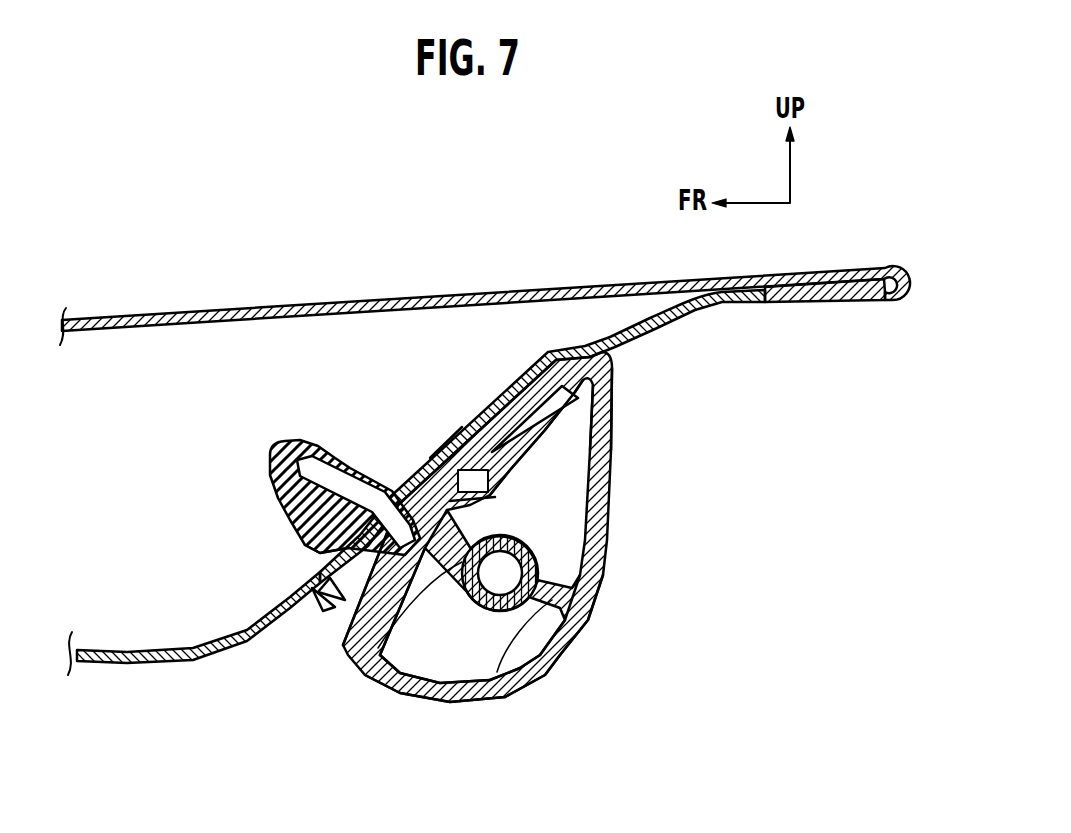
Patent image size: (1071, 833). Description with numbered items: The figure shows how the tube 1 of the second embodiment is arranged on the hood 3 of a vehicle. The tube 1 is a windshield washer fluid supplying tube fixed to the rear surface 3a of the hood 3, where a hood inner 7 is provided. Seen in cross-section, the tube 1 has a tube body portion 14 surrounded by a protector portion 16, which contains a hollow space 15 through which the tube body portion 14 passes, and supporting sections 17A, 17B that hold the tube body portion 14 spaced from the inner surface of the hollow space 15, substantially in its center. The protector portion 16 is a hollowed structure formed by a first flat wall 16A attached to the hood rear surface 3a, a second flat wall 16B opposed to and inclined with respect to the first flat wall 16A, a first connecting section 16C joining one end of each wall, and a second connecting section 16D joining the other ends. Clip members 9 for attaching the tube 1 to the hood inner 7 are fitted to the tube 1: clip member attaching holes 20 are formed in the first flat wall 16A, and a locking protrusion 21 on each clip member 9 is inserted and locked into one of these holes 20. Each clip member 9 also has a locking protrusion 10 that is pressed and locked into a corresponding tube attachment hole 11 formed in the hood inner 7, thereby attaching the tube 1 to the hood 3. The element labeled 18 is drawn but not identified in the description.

The tube 1 is at (416, 553).
The hood 3 is at (347, 306).
The rear surface of hood 3a is at (740, 300).
The hood inner 7 is at (133, 662).
The clip member 9 is at (443, 440).
The locking protrusion 10 is at (275, 458).
The tube attachment hole 11 is at (310, 532).
The tube body portion 14 is at (470, 610).
The hollow space 15 is at (557, 447).
The protector portion 16 is at (600, 483).
The first flat wall 16A is at (522, 397).
The second flat wall 16B is at (565, 612).
The first connecting section 16C is at (600, 417).
The second connecting section 16D is at (417, 691).
The supporting section 17A is at (357, 653).
The supporting section 17B is at (493, 703).
The boss 18 is at (500, 573).
The clip member attaching hole 20 is at (483, 480).
The locking protrusion 21 is at (487, 500).